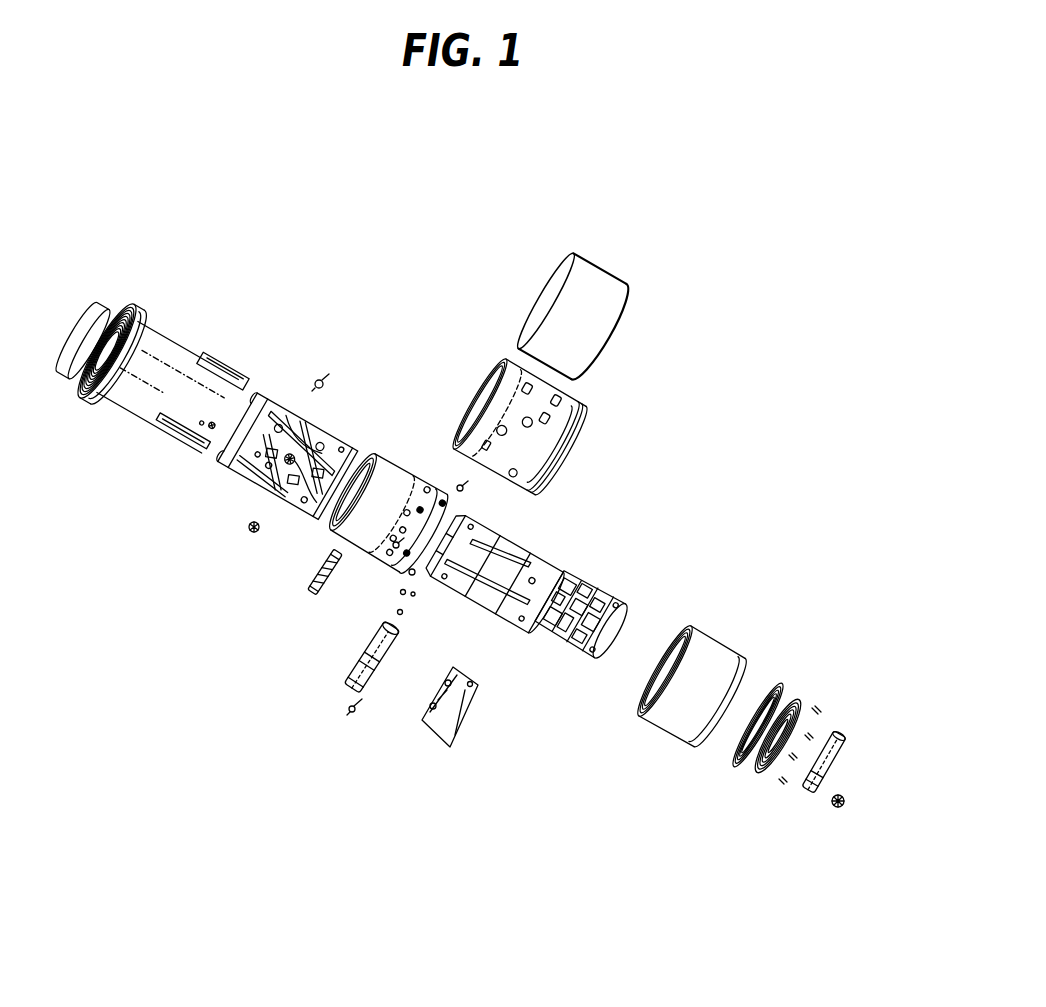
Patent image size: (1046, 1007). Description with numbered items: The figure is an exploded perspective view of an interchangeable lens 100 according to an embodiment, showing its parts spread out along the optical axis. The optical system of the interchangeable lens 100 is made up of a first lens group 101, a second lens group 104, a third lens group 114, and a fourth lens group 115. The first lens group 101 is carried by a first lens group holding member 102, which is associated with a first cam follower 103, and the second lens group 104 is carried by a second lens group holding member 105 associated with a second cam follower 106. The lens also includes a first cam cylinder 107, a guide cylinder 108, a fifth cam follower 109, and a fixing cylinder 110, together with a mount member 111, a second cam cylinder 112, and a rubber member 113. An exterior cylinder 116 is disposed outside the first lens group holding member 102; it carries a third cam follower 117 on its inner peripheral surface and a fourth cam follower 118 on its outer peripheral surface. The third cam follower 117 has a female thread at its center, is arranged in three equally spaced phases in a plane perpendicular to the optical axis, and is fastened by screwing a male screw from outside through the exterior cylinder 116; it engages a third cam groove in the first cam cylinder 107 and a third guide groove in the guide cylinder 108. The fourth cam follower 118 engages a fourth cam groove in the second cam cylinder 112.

The interchangeable lens 100 is at (505, 275).
The first lens group 101 is at (104, 312).
The first lens group holding member 102 is at (160, 347).
The first cam follower 103 is at (327, 377).
The second lens group 104 is at (308, 584).
The second lens group holding member 105 is at (350, 679).
The second cam follower 106 is at (346, 708).
The first cam cylinder 107 is at (332, 438).
The guide cylinder 108 is at (503, 542).
The fifth cam follower 109 is at (458, 486).
The fixing cylinder 110 is at (708, 643).
The mount member 111 is at (798, 701).
The second cam cylinder 112 is at (573, 447).
The rubber member 113 is at (610, 330).
The third lens group 114 is at (458, 718).
The fourth lens group 115 is at (567, 650).
The exterior cylinder 116 is at (392, 475).
The third cam follower 117 is at (416, 572).
The fourth cam follower 118 is at (395, 548).